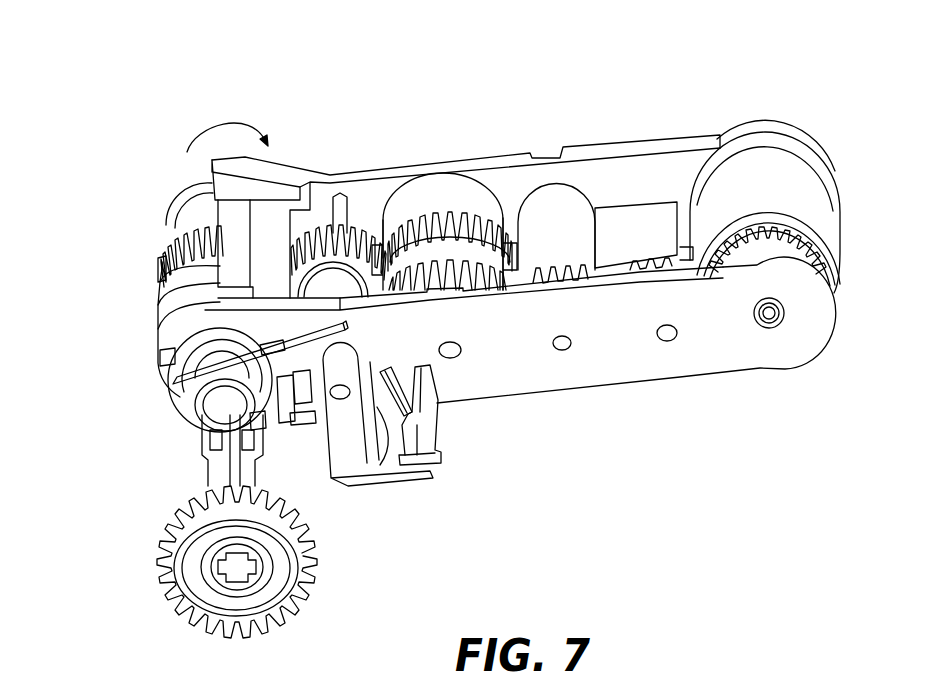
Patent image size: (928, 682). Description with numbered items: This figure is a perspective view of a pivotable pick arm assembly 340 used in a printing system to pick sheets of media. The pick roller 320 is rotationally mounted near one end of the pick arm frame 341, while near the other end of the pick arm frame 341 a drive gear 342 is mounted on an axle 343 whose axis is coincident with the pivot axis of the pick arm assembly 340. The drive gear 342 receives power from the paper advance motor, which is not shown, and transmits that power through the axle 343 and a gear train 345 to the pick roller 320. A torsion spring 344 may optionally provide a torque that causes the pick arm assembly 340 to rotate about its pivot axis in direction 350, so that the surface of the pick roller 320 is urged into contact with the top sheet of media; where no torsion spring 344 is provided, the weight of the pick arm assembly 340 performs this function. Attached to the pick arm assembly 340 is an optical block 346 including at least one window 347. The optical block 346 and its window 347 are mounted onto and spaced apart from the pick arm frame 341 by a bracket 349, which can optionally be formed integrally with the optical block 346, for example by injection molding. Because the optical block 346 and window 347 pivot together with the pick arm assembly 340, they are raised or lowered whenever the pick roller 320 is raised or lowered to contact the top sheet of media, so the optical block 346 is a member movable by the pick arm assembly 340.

The pick arm assembly 340 is at (116, 78).
The direction 350 is at (232, 112).
The pick roller 320 is at (820, 207).
The pick arm frame 341 is at (637, 370).
The gear train 345 is at (151, 283).
The torsion spring 344 is at (170, 398).
The axle 343 is at (213, 461).
The drive gear 342 is at (158, 538).
The bracket 349 is at (336, 450).
The window 347 is at (404, 368).
The optical block 346 is at (435, 437).